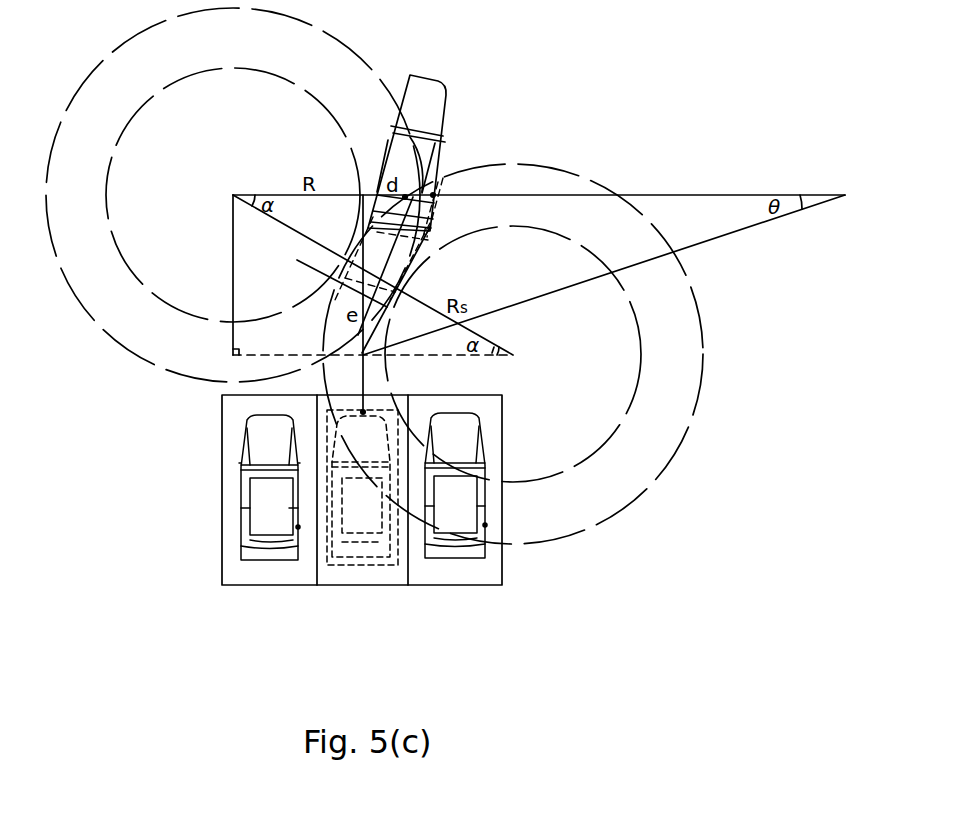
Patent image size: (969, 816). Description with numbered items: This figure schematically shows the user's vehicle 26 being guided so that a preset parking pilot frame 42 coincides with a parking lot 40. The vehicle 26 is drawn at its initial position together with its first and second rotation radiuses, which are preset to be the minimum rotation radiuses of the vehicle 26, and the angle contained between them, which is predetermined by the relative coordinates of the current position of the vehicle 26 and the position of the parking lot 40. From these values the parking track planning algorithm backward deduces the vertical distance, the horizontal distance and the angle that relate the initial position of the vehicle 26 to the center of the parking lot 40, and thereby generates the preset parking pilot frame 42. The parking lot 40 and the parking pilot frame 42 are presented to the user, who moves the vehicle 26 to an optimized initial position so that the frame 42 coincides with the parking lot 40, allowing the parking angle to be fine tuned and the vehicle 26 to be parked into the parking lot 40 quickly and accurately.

The vehicle 26 is at (432, 97).
The parking lot 40 is at (352, 573).
The preset parking pilot frame 42 is at (387, 565).